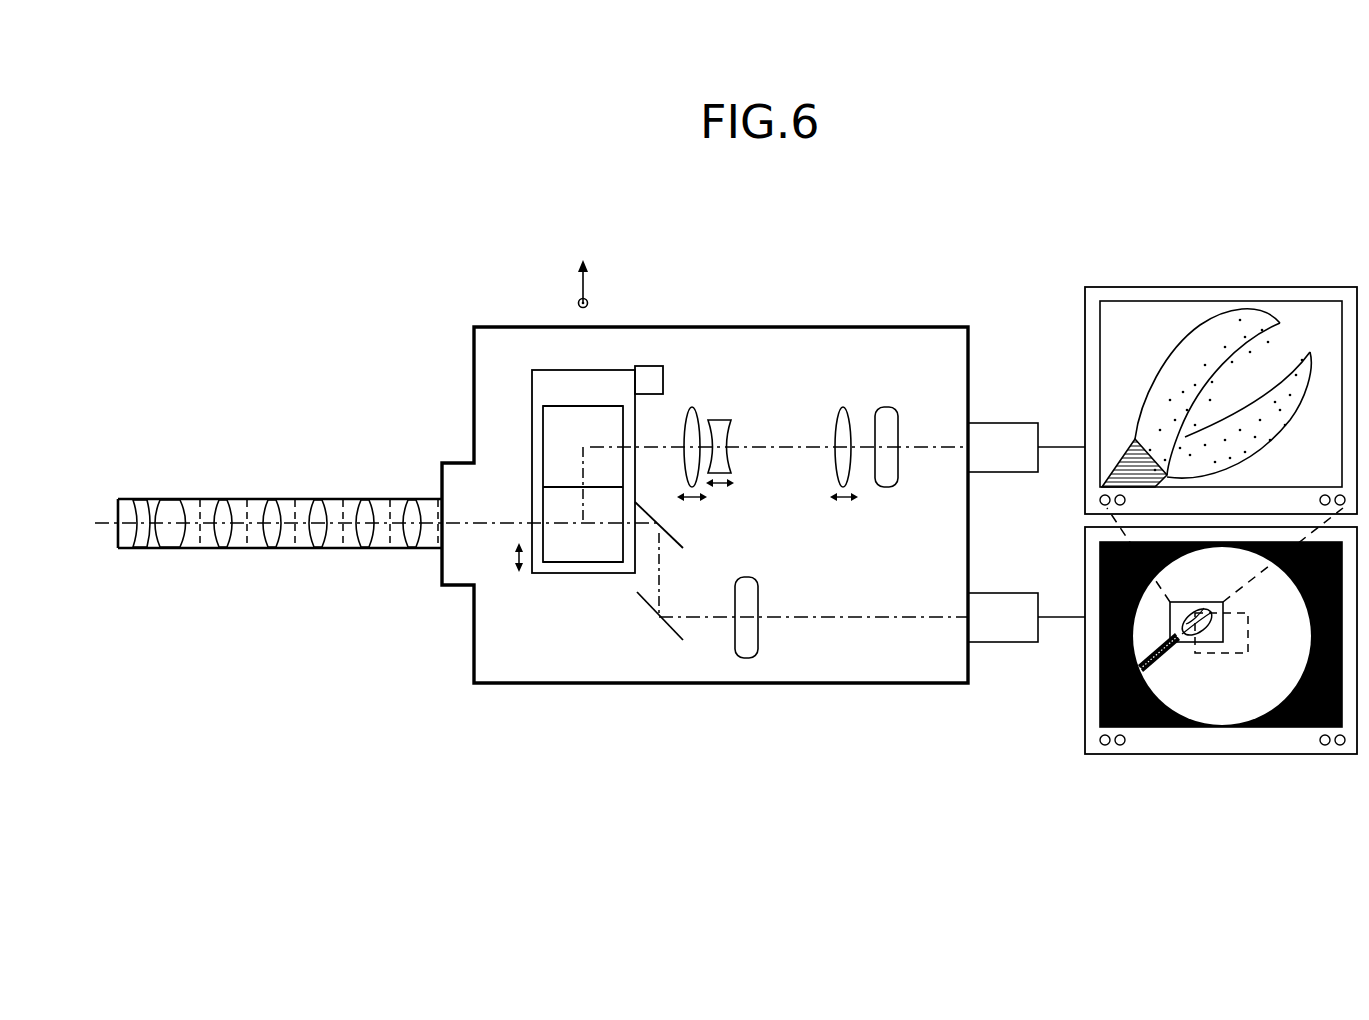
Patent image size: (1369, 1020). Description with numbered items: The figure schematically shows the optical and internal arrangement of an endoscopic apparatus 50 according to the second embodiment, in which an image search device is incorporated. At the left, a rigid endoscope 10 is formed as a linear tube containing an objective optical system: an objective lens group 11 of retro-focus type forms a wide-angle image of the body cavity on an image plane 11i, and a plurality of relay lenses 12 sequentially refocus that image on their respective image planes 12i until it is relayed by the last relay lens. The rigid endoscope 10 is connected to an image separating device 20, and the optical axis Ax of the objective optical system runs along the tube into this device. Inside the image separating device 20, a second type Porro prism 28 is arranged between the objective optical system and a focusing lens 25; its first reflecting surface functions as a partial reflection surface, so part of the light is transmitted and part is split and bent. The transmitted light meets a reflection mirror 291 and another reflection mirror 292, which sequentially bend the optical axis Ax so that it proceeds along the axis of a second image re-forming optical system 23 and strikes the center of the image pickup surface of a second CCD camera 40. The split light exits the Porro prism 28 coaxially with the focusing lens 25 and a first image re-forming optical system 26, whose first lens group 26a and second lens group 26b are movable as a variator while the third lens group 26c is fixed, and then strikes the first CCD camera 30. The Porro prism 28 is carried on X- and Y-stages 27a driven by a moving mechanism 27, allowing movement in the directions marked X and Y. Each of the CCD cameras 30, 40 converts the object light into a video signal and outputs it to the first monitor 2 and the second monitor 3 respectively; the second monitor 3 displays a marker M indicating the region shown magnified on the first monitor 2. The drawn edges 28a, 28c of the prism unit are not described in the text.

The first monitor 2 is at (1222, 286).
The second monitor 3 is at (1221, 665).
The rigid endoscope 10 is at (389, 498).
The objective lens group 11 is at (190, 492).
The image plane 11i is at (200, 552).
The relay lenses 12 is at (224, 498).
The image planes 12i is at (247, 552).
The image separating device 20 is at (509, 326).
The second image re-forming optical system 23 is at (757, 640).
The focusing lens 25 is at (692, 405).
The first image re-forming optical system 26 is at (905, 366).
The first lens group 26a is at (720, 419).
The second lens group 26b is at (843, 405).
The third lens group 26c is at (885, 406).
The moving mechanism 27 is at (663, 388).
The X- and Y-stages 27a is at (580, 370).
The second type Porro prism 28 is at (534, 446).
The lower edge of image pickup device 28a is at (557, 564).
The upper edge of image pickup device 28c is at (557, 405).
The reflection mirror 291 is at (676, 550).
The reflection mirror 292 is at (648, 607).
The first CCD camera 30 is at (1003, 422).
The second CCD camera 40 is at (1003, 643).
The endoscopic apparatus 50 is at (914, 282).
The optical axis Ax is at (476, 512).
The magnified region marker M is at (1198, 610).
The X-direction X is at (593, 273).
The Y-direction Y is at (594, 301).